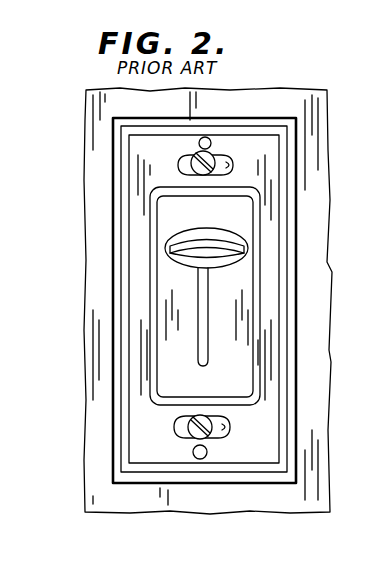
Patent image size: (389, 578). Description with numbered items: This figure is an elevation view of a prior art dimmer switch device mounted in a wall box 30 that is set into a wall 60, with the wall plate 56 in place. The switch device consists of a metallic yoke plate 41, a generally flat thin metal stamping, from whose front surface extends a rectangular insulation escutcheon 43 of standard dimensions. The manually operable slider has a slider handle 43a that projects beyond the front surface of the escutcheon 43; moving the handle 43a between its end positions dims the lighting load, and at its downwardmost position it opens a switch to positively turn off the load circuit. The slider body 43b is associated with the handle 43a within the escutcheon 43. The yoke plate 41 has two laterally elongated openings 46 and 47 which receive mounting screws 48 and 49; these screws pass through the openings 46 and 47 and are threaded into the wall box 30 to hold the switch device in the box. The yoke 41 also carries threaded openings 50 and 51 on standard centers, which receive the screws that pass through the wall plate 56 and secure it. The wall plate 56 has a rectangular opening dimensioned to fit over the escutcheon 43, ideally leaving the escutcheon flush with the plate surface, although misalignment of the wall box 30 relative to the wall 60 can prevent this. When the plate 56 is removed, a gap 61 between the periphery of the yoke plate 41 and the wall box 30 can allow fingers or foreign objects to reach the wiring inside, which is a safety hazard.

The wall box 30 is at (113, 230).
The yoke plate 41 is at (270, 176).
The insulation escutcheon 43 is at (204, 316).
The slider handle 43a is at (165, 252).
The slider stem 43b is at (277, 317).
The laterally elongated opening 46 is at (235, 163).
The laterally elongated opening 47 is at (231, 427).
The mounting screw 48 is at (213, 150).
The mounting screw 49 is at (185, 437).
The threaded opening 50 is at (194, 145).
The threaded opening 51 is at (203, 460).
The wall plate 56 is at (266, 296).
The wall 60 is at (100, 115).
The gap 61 is at (124, 322).